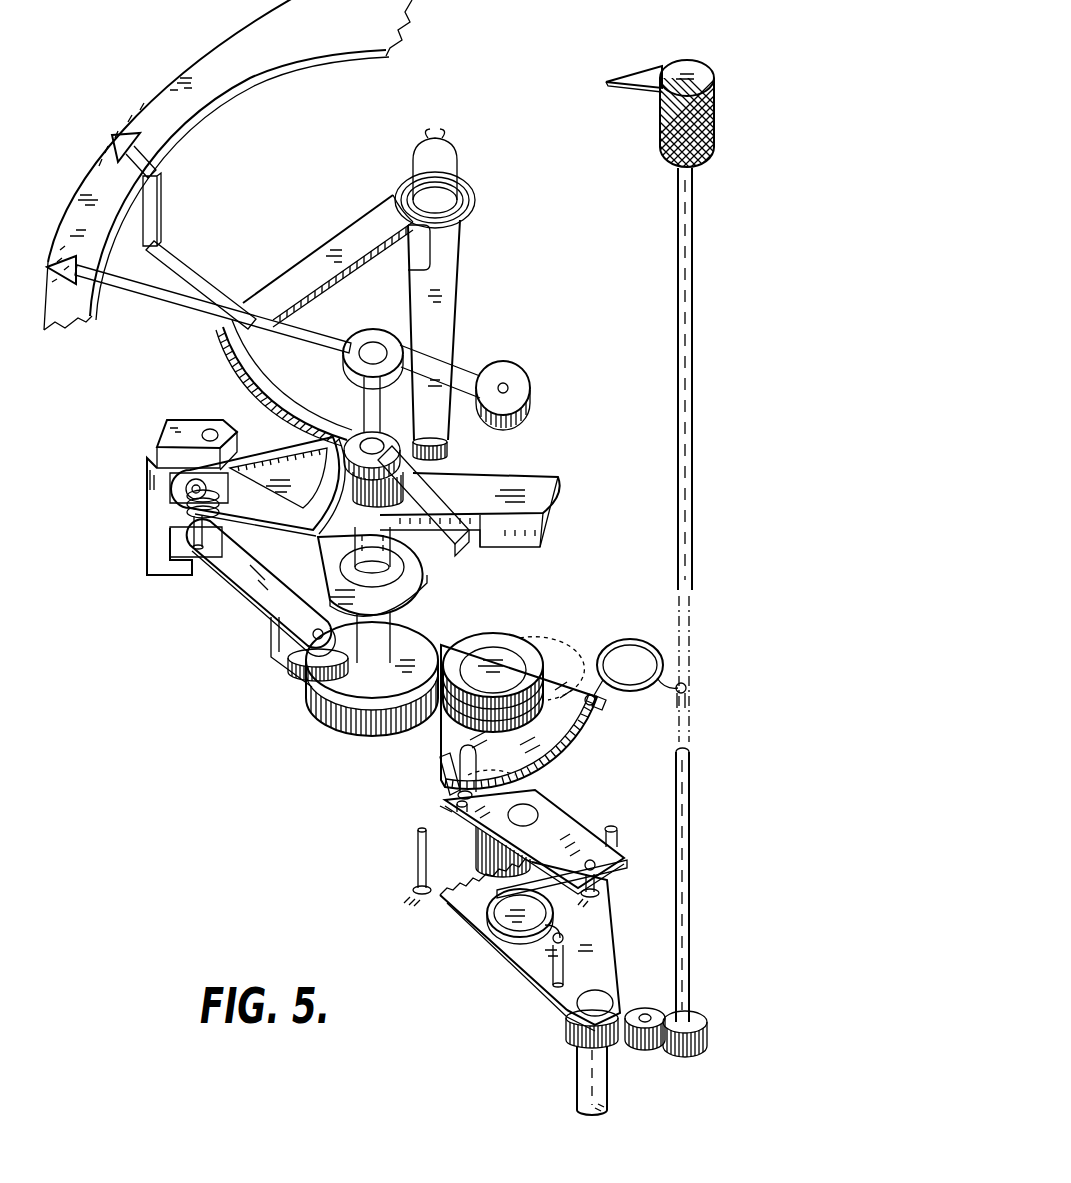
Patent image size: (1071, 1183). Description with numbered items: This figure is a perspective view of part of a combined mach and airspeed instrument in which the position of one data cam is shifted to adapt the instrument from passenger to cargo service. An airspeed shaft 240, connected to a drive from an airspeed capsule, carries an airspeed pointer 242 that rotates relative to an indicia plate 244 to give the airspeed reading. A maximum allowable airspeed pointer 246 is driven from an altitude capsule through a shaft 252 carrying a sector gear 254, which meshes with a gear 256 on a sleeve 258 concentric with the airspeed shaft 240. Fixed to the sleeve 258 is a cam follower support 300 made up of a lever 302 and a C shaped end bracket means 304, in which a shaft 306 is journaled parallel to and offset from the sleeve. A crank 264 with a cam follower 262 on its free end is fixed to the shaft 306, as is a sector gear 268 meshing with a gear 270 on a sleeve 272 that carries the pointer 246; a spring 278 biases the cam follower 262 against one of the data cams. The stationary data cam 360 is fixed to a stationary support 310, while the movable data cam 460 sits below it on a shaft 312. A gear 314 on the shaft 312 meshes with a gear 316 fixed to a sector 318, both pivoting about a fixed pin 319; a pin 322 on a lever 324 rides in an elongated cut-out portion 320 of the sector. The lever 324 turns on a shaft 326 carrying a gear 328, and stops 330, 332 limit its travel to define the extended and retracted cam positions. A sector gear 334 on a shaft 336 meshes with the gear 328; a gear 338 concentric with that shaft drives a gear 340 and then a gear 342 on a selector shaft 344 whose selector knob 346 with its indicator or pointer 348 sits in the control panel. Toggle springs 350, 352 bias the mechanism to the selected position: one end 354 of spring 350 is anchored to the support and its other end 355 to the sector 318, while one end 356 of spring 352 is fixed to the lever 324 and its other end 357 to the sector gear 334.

The airspeed shaft 240 is at (352, 354).
The airspeed pointer 242 is at (190, 303).
The indicia plate 244 is at (84, 165).
The maximum allowable airspeed pointer 246 is at (158, 203).
The shaft 252 is at (467, 133).
The sector gear 254 is at (445, 302).
The gear 256 is at (430, 462).
The sleeve 258 is at (347, 560).
The cam follower 262 is at (305, 663).
The crank 264 is at (237, 590).
The sector gear 268 is at (275, 458).
The gear 270 is at (334, 543).
The sleeve 272 is at (430, 483).
The spring 278 is at (187, 523).
The cam follower support 300 is at (140, 513).
The lever 302 is at (532, 488).
The C shaped end bracket means 304 is at (163, 435).
The shaft 306 is at (195, 545).
The stationary support 310 is at (427, 578).
The shaft 312 is at (378, 730).
The gear 314 is at (327, 712).
The gear 316 is at (547, 665).
The sector 318 is at (573, 730).
The fixed pin 319 is at (507, 667).
The elongated cut-out portion 320 is at (463, 760).
The pin 322 is at (455, 797).
The lever 324 is at (440, 806).
The shaft 326 is at (532, 820).
The gear 328 is at (467, 840).
The stop 330 is at (418, 850).
The stop 332 is at (640, 823).
The sector gear 334 is at (468, 910).
The shaft 336 is at (585, 1073).
The gear 338 is at (570, 1034).
The gear 340 is at (645, 1030).
The gear 342 is at (700, 1020).
The selector shaft 344 is at (690, 933).
The selector knob 346 is at (713, 103).
The indicator or pointer 348 is at (637, 73).
The toggle spring 350 is at (630, 642).
The toggle spring 352 is at (490, 940).
The end of toggle spring 354 is at (695, 679).
The end of toggle spring 355 is at (604, 706).
The end of toggle spring 356 is at (610, 872).
The end of toggle spring 357 is at (563, 927).
The stationary data cam 360 is at (443, 565).
The movable data cam 460 is at (405, 624).